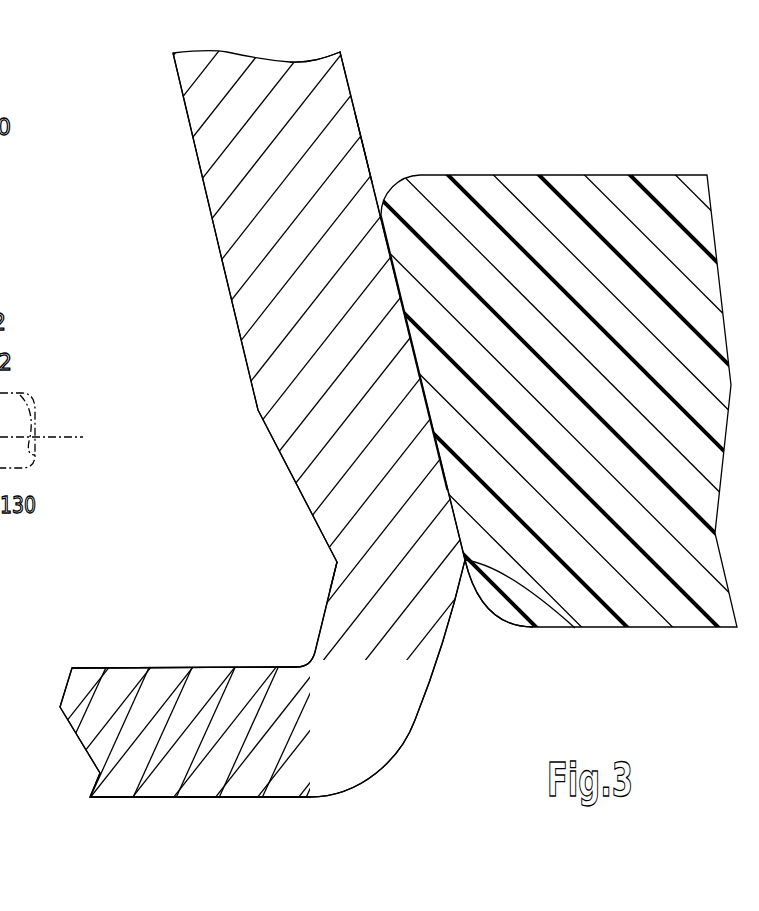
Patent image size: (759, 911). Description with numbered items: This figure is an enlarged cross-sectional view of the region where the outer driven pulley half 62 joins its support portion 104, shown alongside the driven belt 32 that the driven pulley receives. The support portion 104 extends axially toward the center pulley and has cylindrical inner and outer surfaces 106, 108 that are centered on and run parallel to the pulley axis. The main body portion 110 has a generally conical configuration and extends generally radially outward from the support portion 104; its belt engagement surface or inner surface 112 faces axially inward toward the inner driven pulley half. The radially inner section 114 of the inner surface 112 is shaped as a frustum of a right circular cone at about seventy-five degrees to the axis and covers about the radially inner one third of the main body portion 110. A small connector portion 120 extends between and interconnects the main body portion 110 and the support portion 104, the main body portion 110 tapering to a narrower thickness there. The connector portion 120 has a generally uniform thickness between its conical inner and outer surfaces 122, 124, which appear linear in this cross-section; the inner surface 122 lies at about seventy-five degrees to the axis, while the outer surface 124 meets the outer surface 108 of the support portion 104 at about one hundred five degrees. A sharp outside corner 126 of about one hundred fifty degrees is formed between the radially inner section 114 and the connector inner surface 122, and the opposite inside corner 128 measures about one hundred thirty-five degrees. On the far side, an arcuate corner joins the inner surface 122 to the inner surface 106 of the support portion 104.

The driven belt 32 is at (548, 258).
The outer driven pulley half 62 is at (236, 321).
The support portion 104 is at (162, 735).
The cylindrical inner surface 106 is at (197, 798).
The cylindrical outer surface 108 is at (210, 667).
The main body portion 110 is at (218, 240).
The inner surface 112 is at (355, 104).
The radially inner section 114 is at (367, 167).
The connector portion 120 is at (390, 645).
The inner surface of connector section 122 is at (444, 640).
The outer surface of connector section 124 is at (324, 617).
The sharp outside corner 126 is at (556, 612).
The inside corner 128 is at (336, 561).